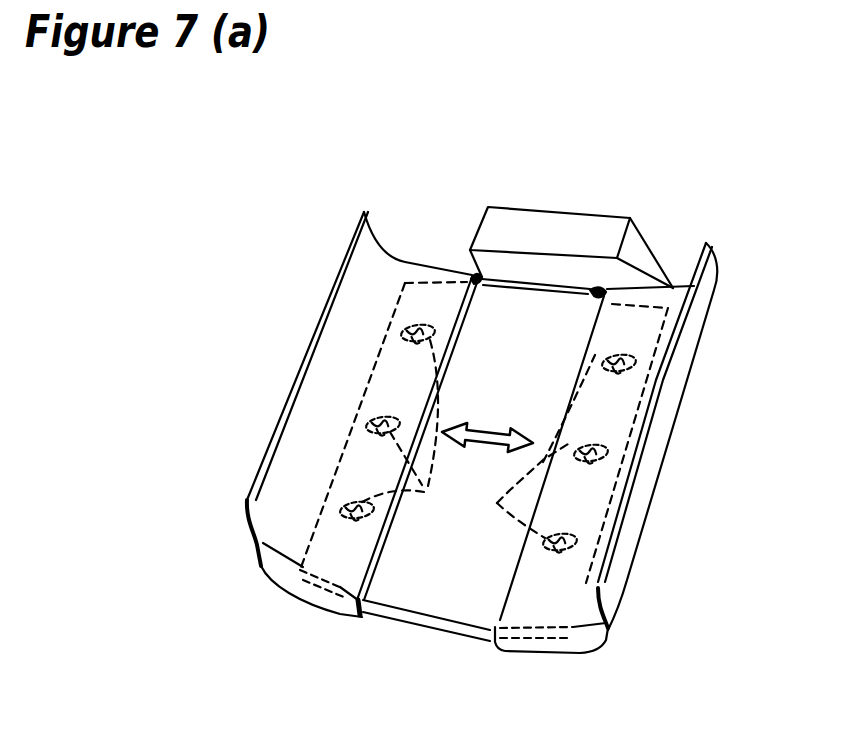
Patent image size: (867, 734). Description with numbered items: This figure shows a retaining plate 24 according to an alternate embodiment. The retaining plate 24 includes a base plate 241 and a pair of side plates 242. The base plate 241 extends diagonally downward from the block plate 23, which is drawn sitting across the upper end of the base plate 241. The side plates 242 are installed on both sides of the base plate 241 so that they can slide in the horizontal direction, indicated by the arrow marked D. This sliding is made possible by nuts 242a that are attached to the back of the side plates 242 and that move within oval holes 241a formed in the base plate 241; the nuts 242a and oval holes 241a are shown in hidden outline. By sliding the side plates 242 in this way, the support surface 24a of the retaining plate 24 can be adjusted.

The block plate 23 is at (578, 231).
The retaining plate 24 is at (494, 444).
The support surface 24a is at (390, 569).
The base plate 241 is at (447, 606).
The oval holes 241a is at (478, 439).
The side plates 242 is at (285, 408).
The nuts 242a is at (598, 365).